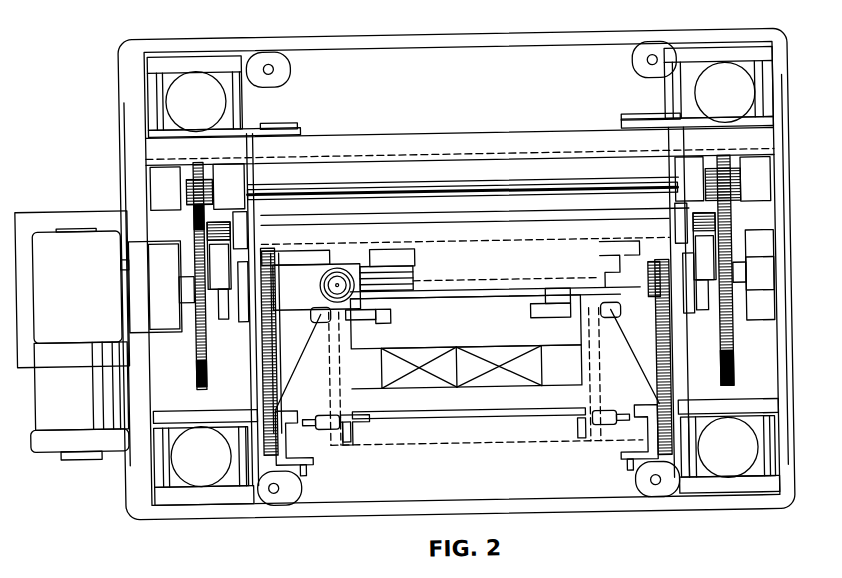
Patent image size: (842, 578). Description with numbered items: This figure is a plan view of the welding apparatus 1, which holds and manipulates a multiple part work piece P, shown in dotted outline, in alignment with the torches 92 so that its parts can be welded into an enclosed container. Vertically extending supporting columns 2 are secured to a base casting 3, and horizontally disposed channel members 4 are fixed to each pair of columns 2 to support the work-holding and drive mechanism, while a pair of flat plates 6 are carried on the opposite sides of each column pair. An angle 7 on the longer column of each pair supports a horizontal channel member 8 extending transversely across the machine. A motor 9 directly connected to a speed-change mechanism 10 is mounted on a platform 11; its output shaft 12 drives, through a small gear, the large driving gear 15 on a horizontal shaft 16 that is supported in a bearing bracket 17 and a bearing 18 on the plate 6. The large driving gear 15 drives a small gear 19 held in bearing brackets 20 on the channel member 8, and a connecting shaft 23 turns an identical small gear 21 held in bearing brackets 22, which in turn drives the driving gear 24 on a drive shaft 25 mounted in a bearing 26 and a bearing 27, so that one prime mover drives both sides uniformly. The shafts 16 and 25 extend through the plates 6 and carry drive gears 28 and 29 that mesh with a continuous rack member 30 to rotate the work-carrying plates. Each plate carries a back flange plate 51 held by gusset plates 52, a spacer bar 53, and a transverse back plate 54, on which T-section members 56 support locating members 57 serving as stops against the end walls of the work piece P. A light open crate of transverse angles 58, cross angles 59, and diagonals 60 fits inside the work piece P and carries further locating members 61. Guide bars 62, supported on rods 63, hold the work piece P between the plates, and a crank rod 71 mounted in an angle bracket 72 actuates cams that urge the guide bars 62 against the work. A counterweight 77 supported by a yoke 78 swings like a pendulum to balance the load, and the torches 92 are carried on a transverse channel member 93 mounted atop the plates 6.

The welding apparatus 1 is at (448, 25).
The supporting columns 2 is at (218, 101).
The base casting 3 is at (502, 37).
The channel members 4 is at (128, 127).
The flat plates 6 is at (252, 474).
The angle 7 is at (289, 124).
The horizontal channel member 8 is at (357, 133).
The motor 9 is at (89, 441).
The speed-change mechanism 10 is at (49, 238).
The platform 11 is at (83, 208).
The output shaft 12 is at (125, 259).
The large driving gear 15 is at (198, 346).
The horizontal shaft 16 is at (270, 262).
The bearing bracket 17 is at (137, 287).
The bearing 18 is at (244, 331).
The small gear 19 is at (198, 208).
The bearing brackets 20 is at (165, 185).
The small gear 21 is at (731, 215).
The bearing brackets 22 is at (755, 178).
The connecting shaft 23 is at (425, 189).
The driving gear 24 is at (729, 360).
The drive shaft 25 is at (674, 246).
The bearing 26 is at (766, 245).
The bearing 27 is at (685, 304).
The drive gear 28 is at (276, 262).
The drive gear 29 is at (653, 285).
The continuous rack member 30 is at (258, 369).
The back flange plate 51 is at (606, 244).
The gusset plates 52 is at (315, 262).
The spacer bar 53 is at (600, 270).
The back plate 54 is at (475, 283).
The T-section members 56 is at (374, 315).
The locating members 57 is at (394, 315).
The transverse angles 58 is at (486, 406).
The cross angles 59 is at (373, 384).
The diagonals 60 is at (476, 345).
The locating members 61 is at (348, 418).
The guide bars 62 is at (319, 315).
The rods 63 is at (318, 407).
The crank rod 71 is at (263, 389).
The angle bracket 72 is at (287, 456).
The counterweight 77 is at (216, 243).
The yoke 78 is at (215, 306).
The torches 92 is at (361, 258).
The transverse channel member 93 is at (556, 230).
The work piece P is at (529, 444).